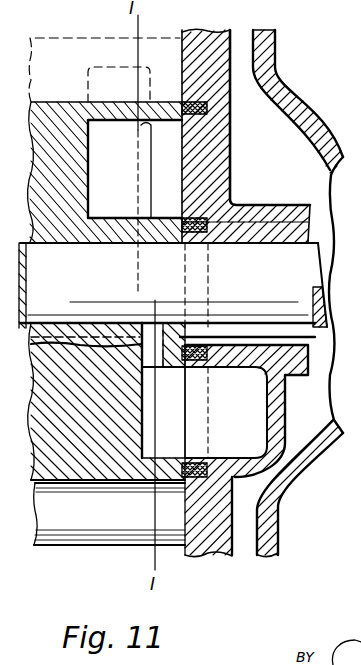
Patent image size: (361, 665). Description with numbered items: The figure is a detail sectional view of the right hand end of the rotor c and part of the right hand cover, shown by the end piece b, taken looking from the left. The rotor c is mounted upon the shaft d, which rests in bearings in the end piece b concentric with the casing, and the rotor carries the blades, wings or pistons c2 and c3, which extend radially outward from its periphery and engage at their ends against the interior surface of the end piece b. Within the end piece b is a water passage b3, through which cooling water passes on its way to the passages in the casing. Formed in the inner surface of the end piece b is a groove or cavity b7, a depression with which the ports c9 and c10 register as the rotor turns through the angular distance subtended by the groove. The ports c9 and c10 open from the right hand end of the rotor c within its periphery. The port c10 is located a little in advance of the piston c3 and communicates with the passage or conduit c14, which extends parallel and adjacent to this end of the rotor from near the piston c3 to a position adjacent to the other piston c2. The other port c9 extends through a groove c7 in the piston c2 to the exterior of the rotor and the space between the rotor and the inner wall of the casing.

The rotor c is at (60, 225).
The blade, wing or piston c2 is at (85, 22).
The blade, wing or piston c3 is at (147, 522).
The groove in piston c7 is at (103, 85).
The port c9 is at (163, 412).
The port c10 is at (136, 169).
The passage or conduit c14 is at (154, 333).
The shaft d is at (173, 290).
The end piece b is at (262, 292).
The water passage b3 is at (246, 201).
The groove or cavity b7 is at (226, 412).